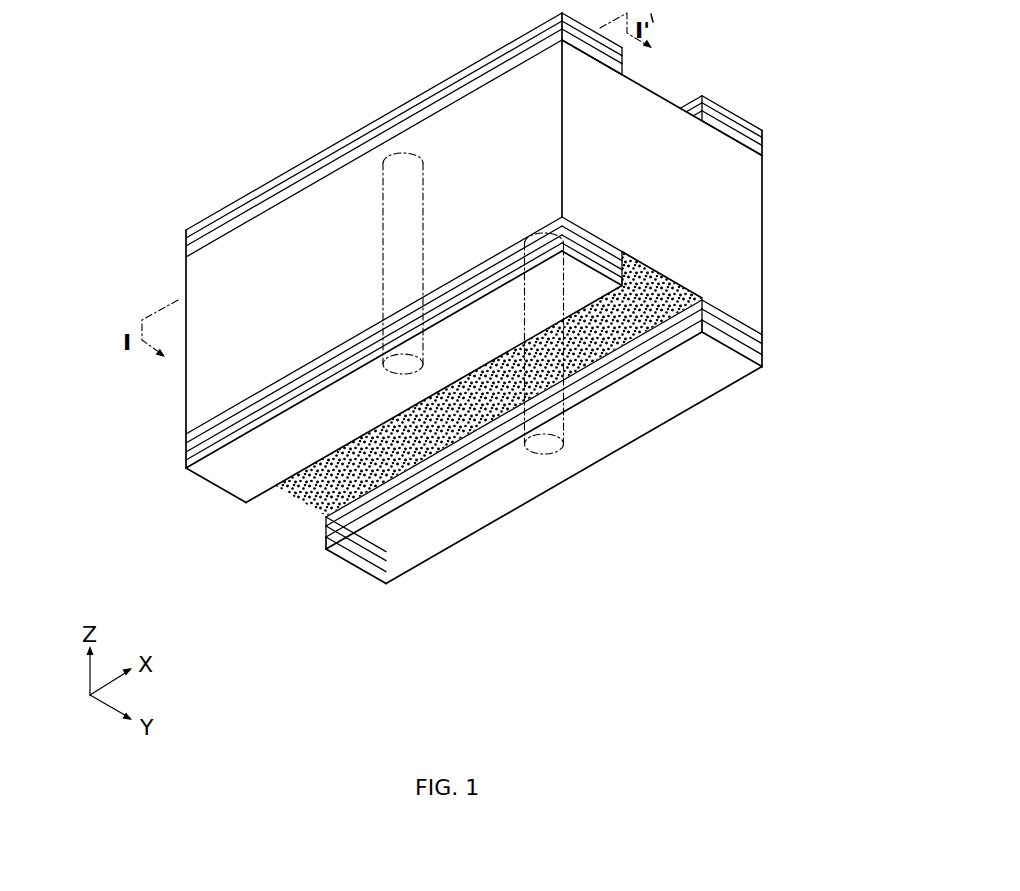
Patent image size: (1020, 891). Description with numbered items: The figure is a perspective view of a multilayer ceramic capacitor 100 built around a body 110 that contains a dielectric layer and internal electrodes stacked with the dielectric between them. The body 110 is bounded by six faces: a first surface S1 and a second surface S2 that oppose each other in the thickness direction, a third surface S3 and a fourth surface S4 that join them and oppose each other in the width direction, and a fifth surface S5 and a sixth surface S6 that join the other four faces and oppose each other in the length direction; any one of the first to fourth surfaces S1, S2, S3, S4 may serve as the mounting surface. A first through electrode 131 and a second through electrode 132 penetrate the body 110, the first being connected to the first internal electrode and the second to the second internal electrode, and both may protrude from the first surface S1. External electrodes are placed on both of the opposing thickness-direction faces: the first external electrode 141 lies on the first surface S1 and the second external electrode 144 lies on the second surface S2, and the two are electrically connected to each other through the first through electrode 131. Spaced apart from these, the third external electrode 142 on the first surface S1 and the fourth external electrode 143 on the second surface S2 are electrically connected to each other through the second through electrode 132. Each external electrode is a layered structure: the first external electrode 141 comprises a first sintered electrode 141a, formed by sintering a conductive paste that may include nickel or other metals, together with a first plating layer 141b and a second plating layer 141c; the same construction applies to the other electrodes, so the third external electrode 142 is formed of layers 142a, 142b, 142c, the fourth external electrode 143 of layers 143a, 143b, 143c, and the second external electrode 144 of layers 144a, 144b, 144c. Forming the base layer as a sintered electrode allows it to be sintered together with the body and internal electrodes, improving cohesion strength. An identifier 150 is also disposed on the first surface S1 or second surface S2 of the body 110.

The multilayer ceramic capacitor 100 is at (278, 57).
The body 110 is at (293, 506).
The first through electrode 131 is at (403, 370).
The second through electrode 132 is at (543, 448).
The first external electrode 141 is at (332, 381).
The first sintered electrode 141a is at (186, 444).
The first plating layer 141b is at (184, 458).
The second plating layer 141c is at (186, 470).
The third external electrode 142 is at (617, 442).
The sintered electrode 142a is at (763, 339).
The first plating layer 142b is at (763, 348).
The second plating layer 142c is at (763, 360).
The fourth external electrode 143 is at (794, 144).
The sintered electrode 143a is at (763, 152).
The first plating layer 143b is at (763, 139).
The second plating layer 143c is at (763, 129).
The second external electrode 144 is at (332, 151).
The sintered electrode 144a is at (186, 251).
The first plating layer 144b is at (186, 240).
The second plating layer 144c is at (186, 231).
The identifier 150 is at (186, 433).
The first surface S1 is at (378, 470).
The second surface S2 is at (317, 204).
The third surface S3 is at (258, 240).
The fourth surface S4 is at (668, 387).
The fifth surface S5 is at (255, 476).
The sixth surface S6 is at (642, 134).